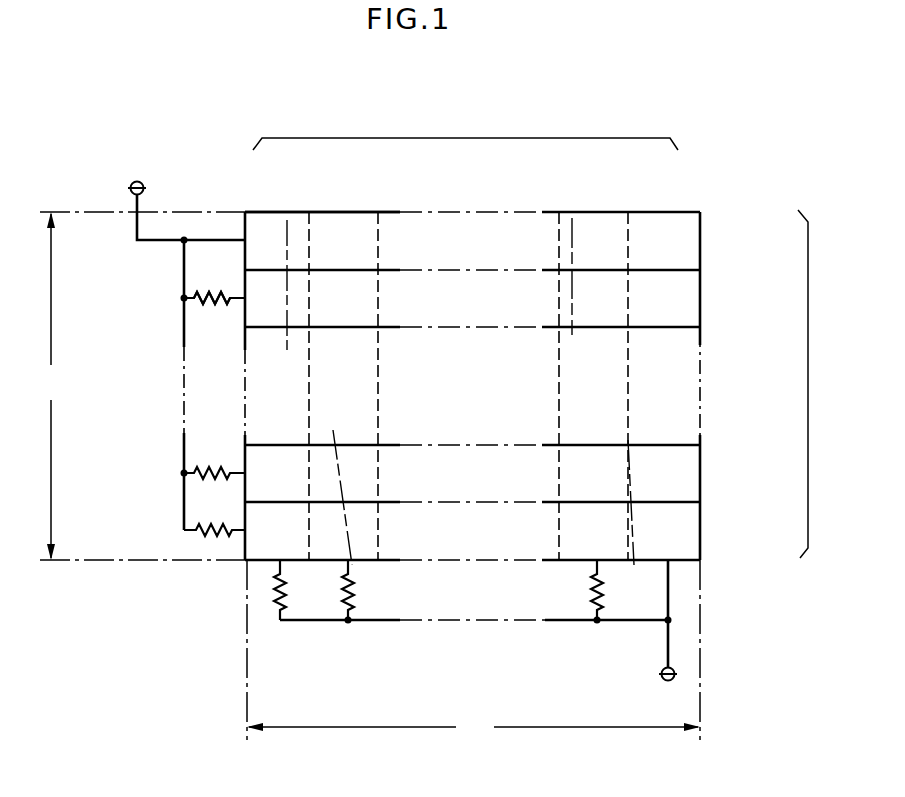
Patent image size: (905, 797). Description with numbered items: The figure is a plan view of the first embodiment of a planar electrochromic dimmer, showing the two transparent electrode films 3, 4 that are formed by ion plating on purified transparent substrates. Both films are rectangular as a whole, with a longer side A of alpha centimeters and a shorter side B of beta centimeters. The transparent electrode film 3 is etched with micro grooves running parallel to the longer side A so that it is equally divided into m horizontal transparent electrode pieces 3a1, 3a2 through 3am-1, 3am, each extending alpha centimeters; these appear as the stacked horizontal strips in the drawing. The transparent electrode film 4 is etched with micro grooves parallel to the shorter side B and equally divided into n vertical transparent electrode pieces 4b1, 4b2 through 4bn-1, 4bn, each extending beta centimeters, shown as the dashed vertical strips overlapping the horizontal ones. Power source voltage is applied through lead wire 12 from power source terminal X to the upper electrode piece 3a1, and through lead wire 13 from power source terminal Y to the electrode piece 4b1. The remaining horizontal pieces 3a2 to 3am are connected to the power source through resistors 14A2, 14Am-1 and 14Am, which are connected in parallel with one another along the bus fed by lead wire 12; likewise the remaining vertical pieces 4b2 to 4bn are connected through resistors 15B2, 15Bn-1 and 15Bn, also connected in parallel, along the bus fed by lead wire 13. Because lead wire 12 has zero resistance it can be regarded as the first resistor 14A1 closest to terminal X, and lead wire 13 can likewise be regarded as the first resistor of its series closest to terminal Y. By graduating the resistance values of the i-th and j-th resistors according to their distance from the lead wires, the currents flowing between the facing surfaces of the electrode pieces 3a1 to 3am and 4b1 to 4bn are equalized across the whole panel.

The transparent electrode film 3 is at (536, 385).
The transparent electrode piece 3a1 is at (696, 244).
The transparent electrode piece 3a2 is at (697, 300).
The transparent electrode piece 3am-1 is at (698, 464).
The transparent electrode piece 3am is at (698, 529).
The transparent electrode film 4 is at (465, 131).
The transparent electrode piece 4bn is at (265, 216).
The transparent electrode piece 4bn-1 is at (336, 212).
The transparent electrode piece 4b2 is at (578, 230).
The transparent electrode piece 4b1 is at (646, 232).
The longer side A is at (400, 212).
The shorter side B is at (700, 337).
The power source terminal X is at (144, 183).
The power source terminal Y is at (668, 681).
The lead wire 12 is at (200, 244).
The resistor 14A1 is at (181, 293).
The resistor 14A2 is at (207, 304).
The resistor 14Am-1 is at (208, 470).
The resistor 14Am is at (188, 526).
The resistor 15Bn is at (275, 605).
The resistor 15Bn-1 is at (352, 600).
The resistor 15B2 is at (597, 591).
The lead wire 13 is at (476, 613).